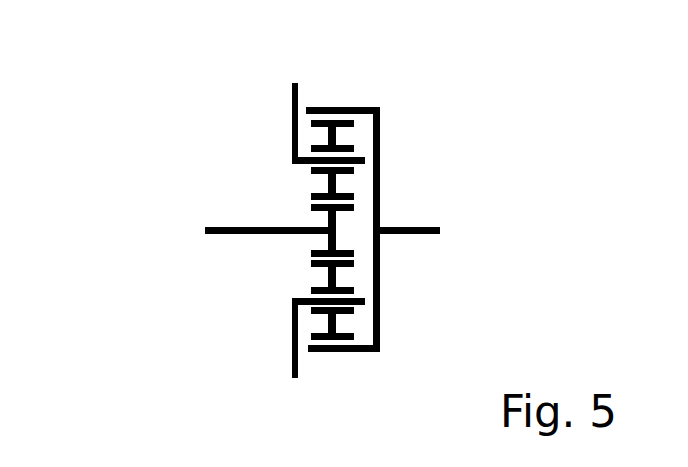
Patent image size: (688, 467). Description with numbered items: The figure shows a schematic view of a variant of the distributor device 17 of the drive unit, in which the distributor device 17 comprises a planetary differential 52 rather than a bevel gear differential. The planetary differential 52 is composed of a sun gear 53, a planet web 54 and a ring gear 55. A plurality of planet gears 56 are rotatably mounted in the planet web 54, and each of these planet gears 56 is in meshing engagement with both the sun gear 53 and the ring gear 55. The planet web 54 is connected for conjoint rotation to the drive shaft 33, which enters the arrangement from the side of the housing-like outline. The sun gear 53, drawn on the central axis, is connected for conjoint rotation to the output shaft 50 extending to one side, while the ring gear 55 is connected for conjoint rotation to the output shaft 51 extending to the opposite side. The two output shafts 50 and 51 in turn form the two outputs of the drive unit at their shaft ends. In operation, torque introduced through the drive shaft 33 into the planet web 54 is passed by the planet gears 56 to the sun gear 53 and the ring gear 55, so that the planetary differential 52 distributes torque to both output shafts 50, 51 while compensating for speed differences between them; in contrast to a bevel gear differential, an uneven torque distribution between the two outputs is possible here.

The distributor device 17 is at (156, 132).
The drive shaft 33 is at (293, 98).
The output shaft 50 is at (205, 230).
The output shaft 51 is at (440, 227).
The planetary differential 52 is at (421, 127).
The sun gear 53 is at (332, 243).
The planet web 54 is at (292, 162).
The ring gear 55 is at (360, 107).
The planet gears 56 is at (336, 187).